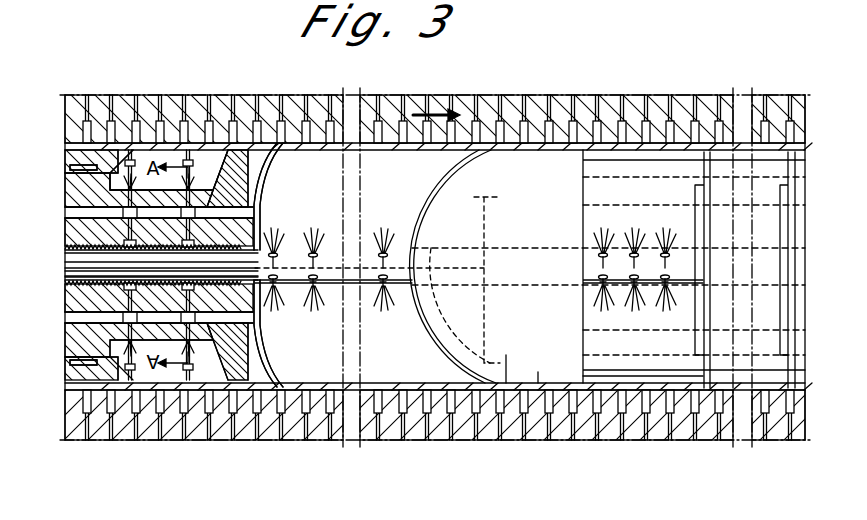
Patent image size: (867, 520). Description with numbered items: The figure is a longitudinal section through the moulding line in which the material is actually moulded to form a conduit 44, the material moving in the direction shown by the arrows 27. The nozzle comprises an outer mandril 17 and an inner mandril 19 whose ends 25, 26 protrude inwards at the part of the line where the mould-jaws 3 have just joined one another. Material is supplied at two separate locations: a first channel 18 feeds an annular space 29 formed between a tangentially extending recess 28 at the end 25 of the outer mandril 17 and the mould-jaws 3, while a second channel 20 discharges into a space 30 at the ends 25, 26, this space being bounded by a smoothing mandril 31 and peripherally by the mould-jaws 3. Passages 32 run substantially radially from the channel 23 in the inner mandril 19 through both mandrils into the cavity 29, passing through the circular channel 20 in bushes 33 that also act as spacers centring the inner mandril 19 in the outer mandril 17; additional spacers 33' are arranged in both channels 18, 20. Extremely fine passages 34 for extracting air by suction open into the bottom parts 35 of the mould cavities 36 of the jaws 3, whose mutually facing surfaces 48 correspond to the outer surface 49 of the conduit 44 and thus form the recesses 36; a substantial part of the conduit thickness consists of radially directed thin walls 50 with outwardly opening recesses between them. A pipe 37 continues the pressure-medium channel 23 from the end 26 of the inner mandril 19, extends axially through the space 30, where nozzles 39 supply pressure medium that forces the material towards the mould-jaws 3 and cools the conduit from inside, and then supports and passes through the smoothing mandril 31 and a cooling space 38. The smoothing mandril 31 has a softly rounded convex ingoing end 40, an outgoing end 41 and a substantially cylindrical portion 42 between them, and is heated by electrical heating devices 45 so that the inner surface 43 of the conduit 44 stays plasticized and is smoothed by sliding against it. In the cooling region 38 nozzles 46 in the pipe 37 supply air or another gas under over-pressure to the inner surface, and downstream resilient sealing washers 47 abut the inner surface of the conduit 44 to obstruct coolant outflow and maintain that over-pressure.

The mould-jaws 3 is at (103, 100).
The outer mandril 17 is at (78, 183).
The first channel 18 is at (68, 158).
The inner mandril 19 is at (76, 240).
The second channel 20 is at (250, 224).
The pressure-medium supply channel 23 is at (78, 265).
The end of outer mandril 25 is at (226, 372).
The end of inner mandril 26 is at (258, 330).
The arrows 27 is at (432, 108).
The tangentially extending recess 28 is at (222, 160).
The annular space 29 is at (163, 148).
The space 30 is at (285, 178).
The smoothing mandril 31 is at (505, 356).
The passages 32 is at (80, 213).
The bushes 33 is at (118, 351).
The additional spacers 33' is at (59, 268).
The fine passages 34 is at (86, 97).
The bottom parts 35 is at (122, 112).
The mould cavities 36 is at (70, 408).
The pipe 37 is at (308, 292).
The cooling space 38 is at (650, 343).
The nozzles 39 is at (383, 250).
The ingoing end 40 is at (448, 358).
The outgoing end 41 is at (590, 368).
The cylindrical portion 42 is at (538, 372).
The inner surface 43 is at (482, 152).
The conduit 44 is at (490, 150).
The electrical heating devices 45 is at (78, 283).
The nozzles 46 is at (610, 292).
The sealing washers 47 is at (777, 352).
The surfaces of mould-jaws 48 is at (283, 97).
The outer surface 49 is at (297, 414).
The walls 50 is at (641, 126).